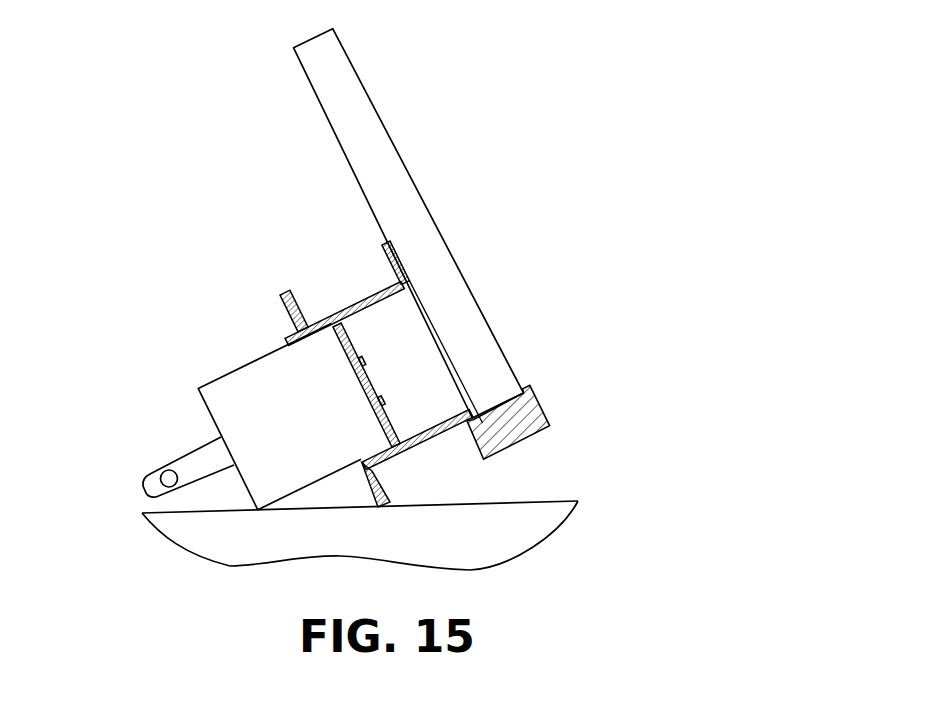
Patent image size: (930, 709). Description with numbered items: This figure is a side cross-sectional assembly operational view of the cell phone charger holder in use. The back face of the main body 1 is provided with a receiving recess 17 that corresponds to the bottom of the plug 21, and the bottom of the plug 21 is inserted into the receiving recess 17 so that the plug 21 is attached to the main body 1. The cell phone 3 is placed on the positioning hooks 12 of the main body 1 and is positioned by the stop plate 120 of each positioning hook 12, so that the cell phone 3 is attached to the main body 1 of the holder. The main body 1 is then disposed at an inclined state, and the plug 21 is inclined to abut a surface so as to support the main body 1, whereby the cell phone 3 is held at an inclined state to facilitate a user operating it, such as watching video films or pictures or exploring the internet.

The main body 1 is at (332, 310).
The cell phone 3 is at (390, 172).
The positioning hook 12 is at (530, 443).
The receiving recess 17 is at (317, 340).
The plug 21 is at (250, 389).
The stop plate 120 is at (526, 387).